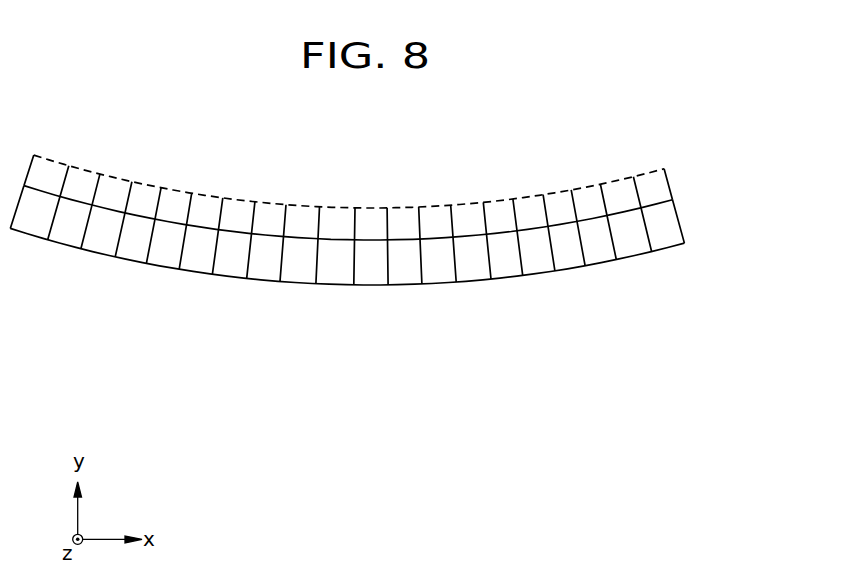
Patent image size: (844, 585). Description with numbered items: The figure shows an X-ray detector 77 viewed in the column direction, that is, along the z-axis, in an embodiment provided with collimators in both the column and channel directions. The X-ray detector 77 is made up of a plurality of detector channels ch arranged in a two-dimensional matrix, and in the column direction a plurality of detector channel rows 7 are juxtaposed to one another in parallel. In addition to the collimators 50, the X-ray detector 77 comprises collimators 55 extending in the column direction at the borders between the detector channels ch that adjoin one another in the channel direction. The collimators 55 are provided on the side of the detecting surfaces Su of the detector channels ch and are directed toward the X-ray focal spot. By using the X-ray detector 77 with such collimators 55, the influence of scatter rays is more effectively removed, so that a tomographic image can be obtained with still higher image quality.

The collimators 55 is at (187, 207).
The collimators 50 is at (348, 169).
The detecting surfaces Su is at (620, 207).
The detector channel row 7 is at (410, 263).
The detector channels ch is at (102, 248).
The X-ray detector 77 is at (410, 262).